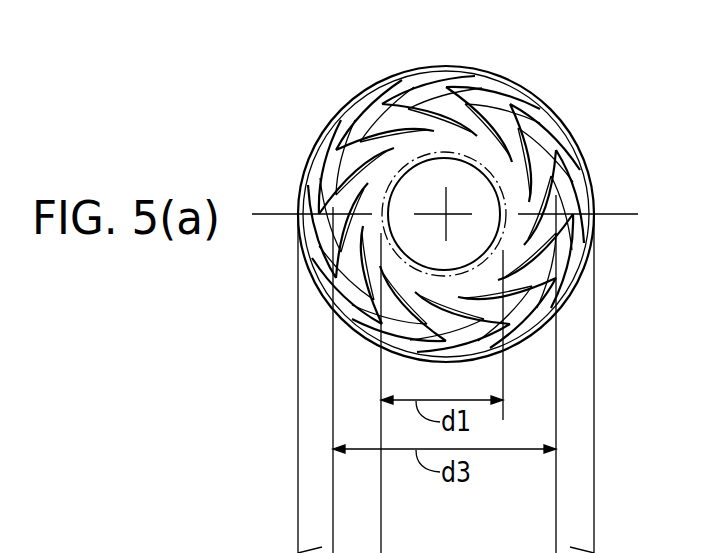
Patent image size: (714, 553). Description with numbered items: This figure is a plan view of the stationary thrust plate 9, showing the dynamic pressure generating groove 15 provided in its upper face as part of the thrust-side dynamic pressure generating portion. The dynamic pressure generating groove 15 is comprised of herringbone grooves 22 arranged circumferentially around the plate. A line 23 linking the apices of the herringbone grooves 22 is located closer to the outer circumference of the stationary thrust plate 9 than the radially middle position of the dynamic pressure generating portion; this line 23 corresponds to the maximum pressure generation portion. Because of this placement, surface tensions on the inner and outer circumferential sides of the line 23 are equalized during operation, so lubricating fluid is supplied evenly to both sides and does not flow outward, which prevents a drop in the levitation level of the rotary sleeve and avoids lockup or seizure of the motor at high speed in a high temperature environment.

The stationary thrust plate 9 is at (565, 128).
The dynamic pressure generating groove 15 is at (583, 175).
The herringbone grooves 22 is at (461, 84).
The line linking apices of the herringbone grooves 23 is at (362, 113).